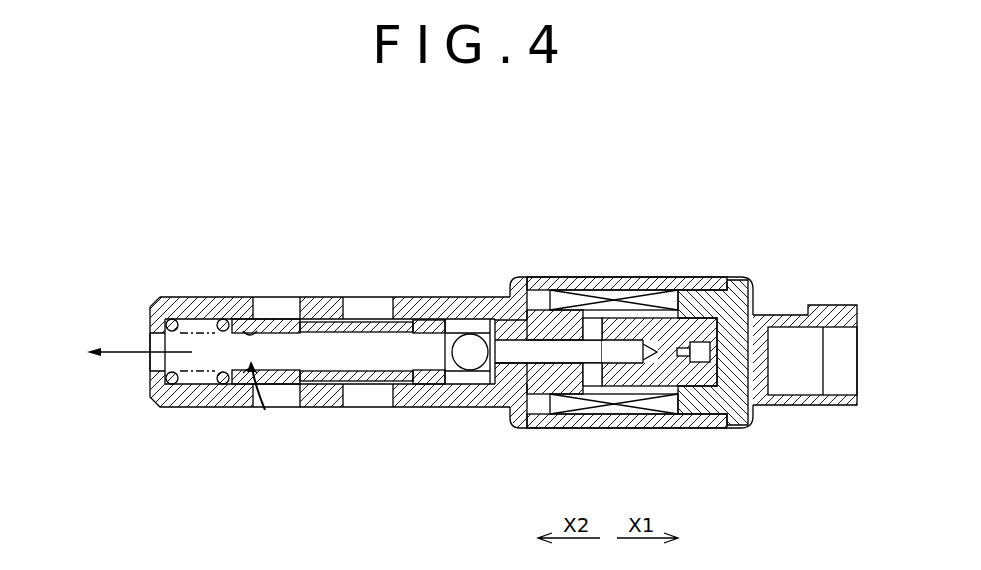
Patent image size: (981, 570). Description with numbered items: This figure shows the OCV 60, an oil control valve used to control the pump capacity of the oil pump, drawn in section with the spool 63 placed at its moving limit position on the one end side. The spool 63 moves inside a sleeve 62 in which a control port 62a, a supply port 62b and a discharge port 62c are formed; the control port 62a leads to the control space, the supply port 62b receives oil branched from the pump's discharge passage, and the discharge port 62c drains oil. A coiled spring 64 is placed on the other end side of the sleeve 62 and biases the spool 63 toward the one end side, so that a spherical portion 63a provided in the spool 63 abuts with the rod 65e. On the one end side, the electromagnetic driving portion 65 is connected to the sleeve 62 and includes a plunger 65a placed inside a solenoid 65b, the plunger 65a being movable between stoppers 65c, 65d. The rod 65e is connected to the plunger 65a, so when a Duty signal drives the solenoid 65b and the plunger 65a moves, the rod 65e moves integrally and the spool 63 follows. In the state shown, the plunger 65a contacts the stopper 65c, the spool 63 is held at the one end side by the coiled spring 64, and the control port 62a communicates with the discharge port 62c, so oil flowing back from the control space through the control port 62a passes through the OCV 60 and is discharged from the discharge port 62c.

The OCV 60 is at (531, 263).
The sleeve 62 is at (443, 302).
The control port 62a is at (283, 397).
The supply port 62b is at (373, 395).
The discharge port 62c is at (157, 343).
The spool 63 is at (374, 325).
The spherical portion 63a is at (472, 357).
The coiled spring 64 is at (172, 320).
The electromagnetic driving portion 65 is at (738, 280).
The plunger 65a is at (645, 375).
The solenoid 65b is at (624, 300).
The stopper 65c is at (702, 380).
The stopper 65d is at (596, 383).
The rod 65e is at (570, 345).